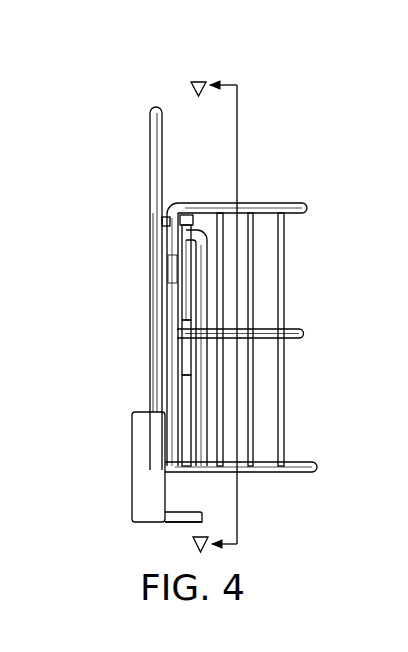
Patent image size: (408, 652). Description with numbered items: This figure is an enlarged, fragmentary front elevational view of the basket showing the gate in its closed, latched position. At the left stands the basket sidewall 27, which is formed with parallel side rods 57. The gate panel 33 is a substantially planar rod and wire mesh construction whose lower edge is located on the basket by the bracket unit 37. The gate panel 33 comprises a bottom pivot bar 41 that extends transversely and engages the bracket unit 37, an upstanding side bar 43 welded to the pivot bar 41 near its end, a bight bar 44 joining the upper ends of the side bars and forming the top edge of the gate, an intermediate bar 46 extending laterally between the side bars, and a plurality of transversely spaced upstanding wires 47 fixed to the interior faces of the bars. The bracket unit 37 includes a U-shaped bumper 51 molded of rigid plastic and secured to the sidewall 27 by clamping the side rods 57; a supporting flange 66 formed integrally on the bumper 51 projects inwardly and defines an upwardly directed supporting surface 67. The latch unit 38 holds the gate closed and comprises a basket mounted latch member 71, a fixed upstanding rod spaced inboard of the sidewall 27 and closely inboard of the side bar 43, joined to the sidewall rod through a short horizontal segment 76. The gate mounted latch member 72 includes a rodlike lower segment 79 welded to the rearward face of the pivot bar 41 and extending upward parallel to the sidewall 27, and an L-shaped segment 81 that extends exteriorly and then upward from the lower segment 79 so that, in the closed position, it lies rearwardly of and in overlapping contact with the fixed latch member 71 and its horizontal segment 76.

The sidewall 27 is at (150, 171).
The gate panel 33 is at (287, 339).
The bracket unit 37 is at (142, 484).
The latch unit 38 is at (176, 181).
The pivot bar 41 is at (258, 466).
The side bar 43 is at (176, 272).
The bight bar 44 is at (294, 203).
The intermediate bar 46 is at (294, 329).
The upstanding wire 47 is at (284, 377).
The bumper 51 is at (142, 497).
The side rod 57 is at (156, 308).
The supporting flange 66 is at (178, 521).
The supporting surface 67 is at (186, 512).
The basket mounted latch member 71 is at (188, 316).
The gate mounted latch member 72 is at (205, 389).
The horizontal segment 76 is at (189, 216).
The lower segment 79 is at (205, 363).
The L-shaped segment 81 is at (201, 236).